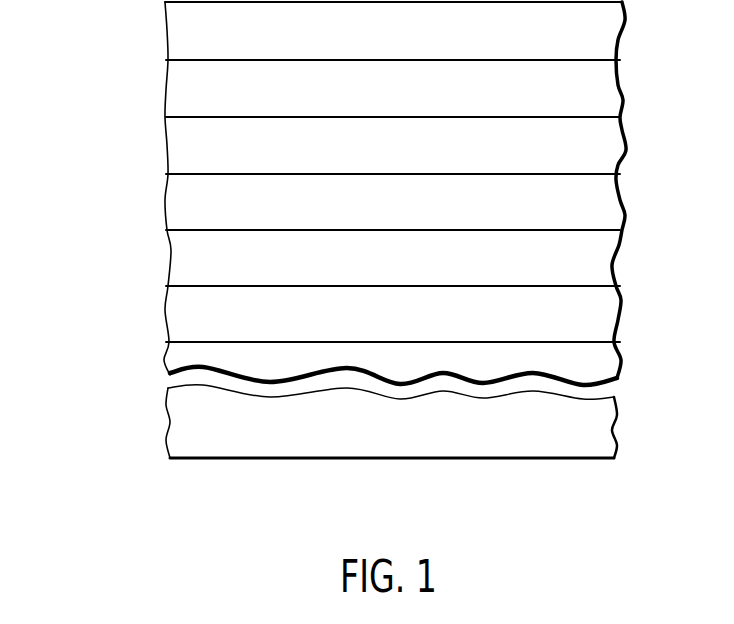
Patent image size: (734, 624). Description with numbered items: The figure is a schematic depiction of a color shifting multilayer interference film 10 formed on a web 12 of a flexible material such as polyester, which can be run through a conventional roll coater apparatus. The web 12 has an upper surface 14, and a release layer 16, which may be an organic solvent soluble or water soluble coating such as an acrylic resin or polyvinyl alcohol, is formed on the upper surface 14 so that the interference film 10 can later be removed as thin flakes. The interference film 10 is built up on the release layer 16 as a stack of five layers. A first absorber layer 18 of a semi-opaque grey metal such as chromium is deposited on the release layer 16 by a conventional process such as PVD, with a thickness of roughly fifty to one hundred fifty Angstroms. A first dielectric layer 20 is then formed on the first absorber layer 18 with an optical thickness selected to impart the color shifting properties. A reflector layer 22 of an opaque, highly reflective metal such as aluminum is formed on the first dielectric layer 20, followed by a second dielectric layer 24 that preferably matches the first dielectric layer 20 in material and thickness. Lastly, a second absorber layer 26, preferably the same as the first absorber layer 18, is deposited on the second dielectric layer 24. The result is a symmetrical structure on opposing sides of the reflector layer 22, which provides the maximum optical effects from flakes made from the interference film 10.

The interference film 10 is at (632, 5).
The web 12 is at (185, 422).
The upper surface 14 is at (218, 342).
The release layer 16 is at (188, 308).
The first absorber layer 18 is at (188, 252).
The first dielectric layer 20 is at (188, 197).
The reflector layer 22 is at (190, 144).
The second dielectric layer 24 is at (190, 87).
The second absorber layer 26 is at (190, 24).